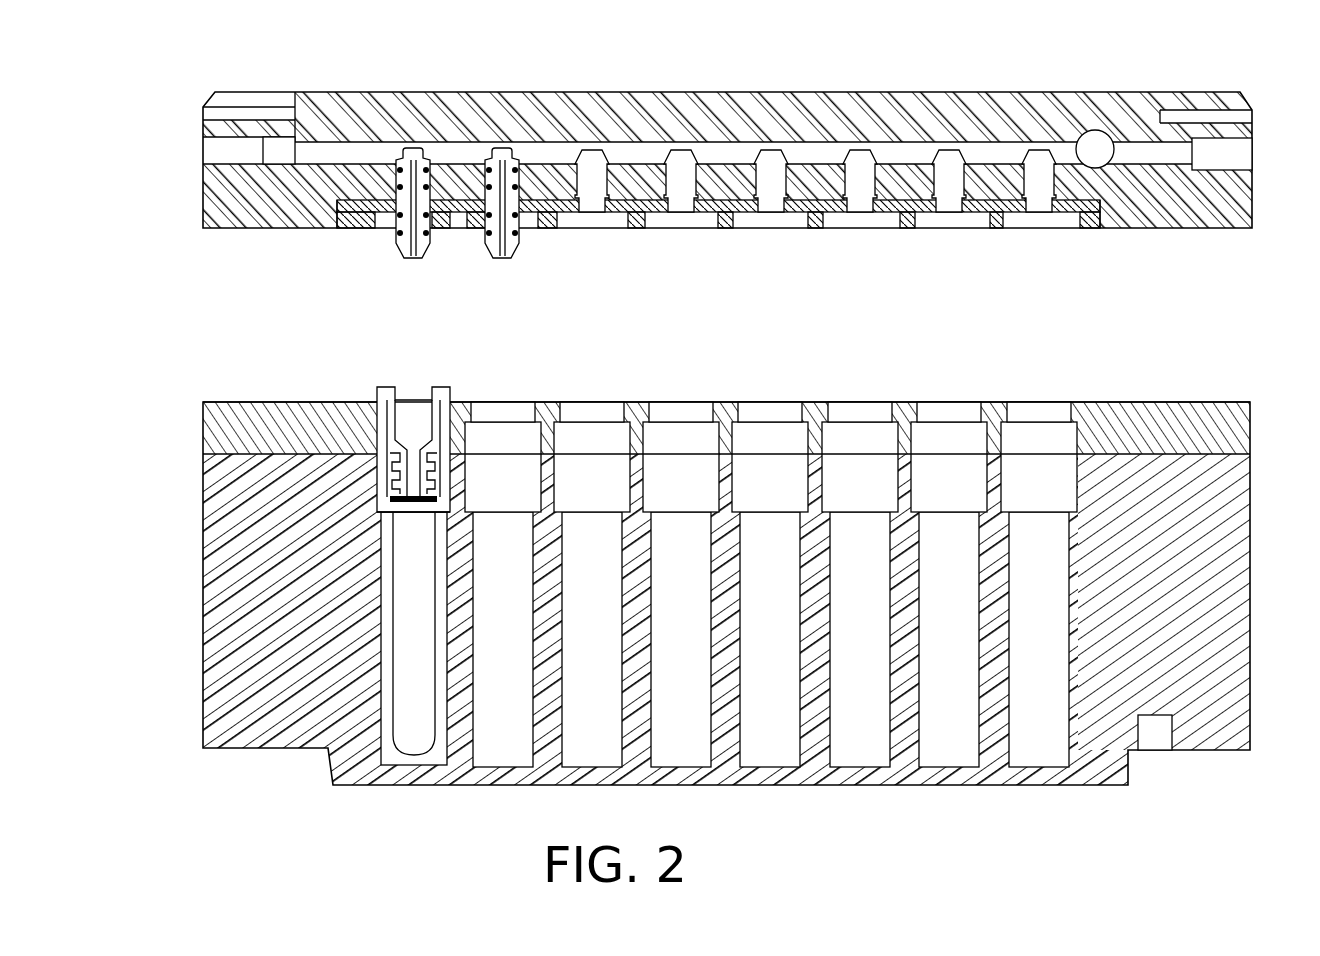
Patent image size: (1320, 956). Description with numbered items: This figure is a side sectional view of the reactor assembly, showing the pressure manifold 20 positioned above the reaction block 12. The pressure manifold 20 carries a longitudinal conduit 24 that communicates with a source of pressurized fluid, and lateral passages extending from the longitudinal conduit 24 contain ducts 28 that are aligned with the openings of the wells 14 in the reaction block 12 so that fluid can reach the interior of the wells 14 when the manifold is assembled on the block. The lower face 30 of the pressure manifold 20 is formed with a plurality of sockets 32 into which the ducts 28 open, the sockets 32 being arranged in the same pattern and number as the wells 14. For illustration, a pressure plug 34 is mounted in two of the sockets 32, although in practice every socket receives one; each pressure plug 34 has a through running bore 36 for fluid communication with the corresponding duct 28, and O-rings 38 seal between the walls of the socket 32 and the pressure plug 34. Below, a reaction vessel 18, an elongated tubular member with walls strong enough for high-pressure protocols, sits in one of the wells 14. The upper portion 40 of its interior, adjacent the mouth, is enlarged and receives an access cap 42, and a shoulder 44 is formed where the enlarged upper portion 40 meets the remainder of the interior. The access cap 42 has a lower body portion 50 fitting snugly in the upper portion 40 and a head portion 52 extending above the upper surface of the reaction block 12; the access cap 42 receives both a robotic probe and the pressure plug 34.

The reaction block 12 is at (282, 400).
The wells 14 is at (385, 665).
The reaction vessel 18 is at (448, 510).
The pressure manifold 20 is at (336, 92).
The longitudinal conduit 24 is at (805, 152).
The ducts 28 is at (588, 150).
The lower face 30 is at (273, 229).
The sockets 32 is at (612, 229).
The pressure plug 34 is at (396, 245).
The through running bore 36 is at (410, 245).
The O-rings 38 is at (491, 148).
The upper portion 40 is at (447, 402).
The access cap 42 is at (385, 448).
The shoulder 44 is at (447, 452).
The lower body portion 50 is at (376, 486).
The head portion 52 is at (405, 400).